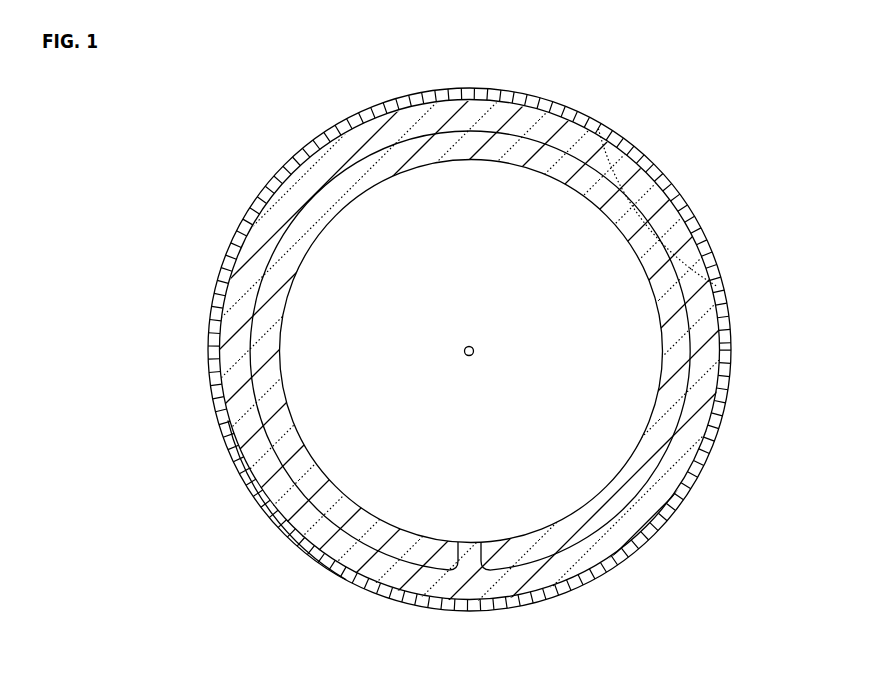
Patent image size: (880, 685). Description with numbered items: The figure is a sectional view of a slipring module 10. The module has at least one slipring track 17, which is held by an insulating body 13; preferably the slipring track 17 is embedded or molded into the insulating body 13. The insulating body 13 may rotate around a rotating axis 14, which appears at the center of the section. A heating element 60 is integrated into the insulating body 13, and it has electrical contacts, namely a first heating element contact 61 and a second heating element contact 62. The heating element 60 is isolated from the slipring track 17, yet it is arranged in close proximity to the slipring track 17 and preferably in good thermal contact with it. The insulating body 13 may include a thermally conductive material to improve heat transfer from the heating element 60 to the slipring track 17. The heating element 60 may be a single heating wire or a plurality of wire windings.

The slipring module 10 is at (670, 175).
The insulating body 13 is at (262, 347).
The rotating axis 14 is at (464, 351).
The slipring track 17 is at (731, 350).
The heating element 60 is at (691, 350).
The first heating element contact 61 is at (458, 542).
The second heating element contact 62 is at (481, 542).